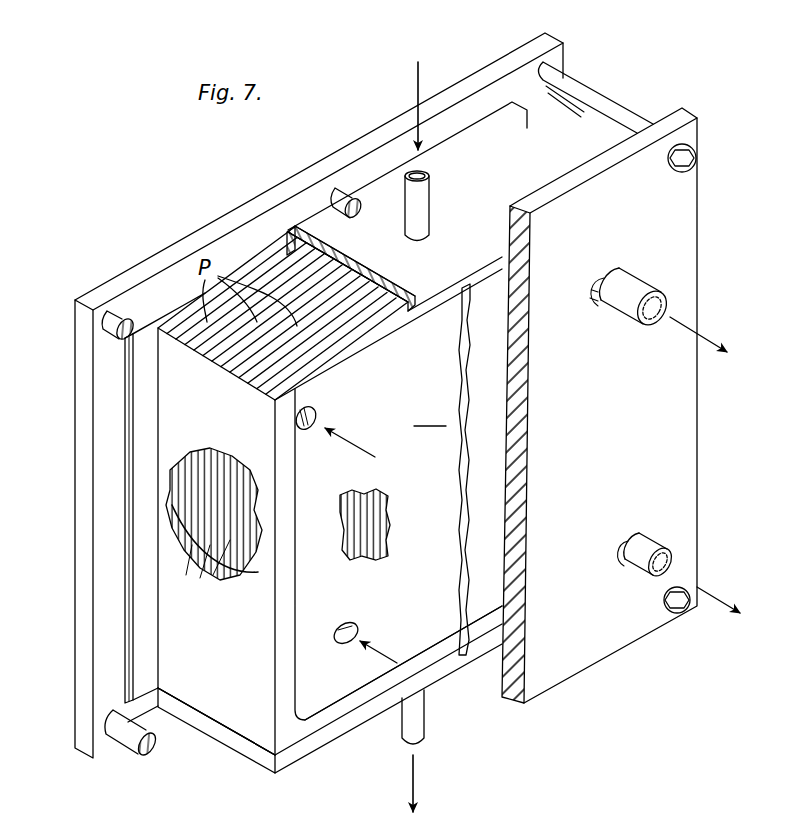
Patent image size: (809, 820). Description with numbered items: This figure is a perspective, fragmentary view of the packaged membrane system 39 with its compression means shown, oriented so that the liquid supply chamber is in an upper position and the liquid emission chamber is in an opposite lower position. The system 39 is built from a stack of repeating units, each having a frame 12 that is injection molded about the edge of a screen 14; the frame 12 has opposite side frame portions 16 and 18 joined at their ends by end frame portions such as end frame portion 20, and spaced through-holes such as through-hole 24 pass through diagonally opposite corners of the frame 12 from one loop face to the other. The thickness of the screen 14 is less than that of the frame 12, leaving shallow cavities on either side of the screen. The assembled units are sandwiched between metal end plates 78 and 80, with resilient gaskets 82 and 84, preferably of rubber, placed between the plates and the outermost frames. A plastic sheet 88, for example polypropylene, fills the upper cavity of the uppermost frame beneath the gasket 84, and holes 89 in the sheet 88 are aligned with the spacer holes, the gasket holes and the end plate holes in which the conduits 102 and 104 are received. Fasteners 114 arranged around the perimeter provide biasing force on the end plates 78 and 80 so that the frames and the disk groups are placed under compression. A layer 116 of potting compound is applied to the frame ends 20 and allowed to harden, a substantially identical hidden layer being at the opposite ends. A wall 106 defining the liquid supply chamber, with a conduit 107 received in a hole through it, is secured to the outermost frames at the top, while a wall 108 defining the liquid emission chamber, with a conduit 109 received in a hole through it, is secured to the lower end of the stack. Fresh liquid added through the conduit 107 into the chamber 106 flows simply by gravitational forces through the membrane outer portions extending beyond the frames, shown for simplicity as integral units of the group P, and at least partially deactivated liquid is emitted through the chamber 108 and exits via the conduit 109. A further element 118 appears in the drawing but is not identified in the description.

The frame 12 is at (355, 382).
The screen 14 is at (365, 526).
The side frame portion 16 is at (357, 695).
The side frame portion 18 is at (387, 348).
The end frame portion 20 is at (214, 529).
The through-hole 24 is at (305, 430).
The packaged membrane system 39 is at (655, 645).
The metal end plate 78 is at (100, 385).
The metal end plate 80 is at (603, 637).
The gasket 82 is at (138, 402).
The gasket 84 is at (474, 633).
The sheet 88 is at (385, 428).
The hole 89 is at (352, 618).
The conduit 102 is at (643, 290).
The conduit 104 is at (657, 548).
The wall 106 is at (517, 123).
The conduit 107 is at (425, 200).
The wall 108 is at (313, 740).
The conduit 109 is at (428, 712).
The fastener 114 is at (598, 90).
The layer of potting compound 116 is at (235, 703).
The fin stack 118 is at (240, 358).